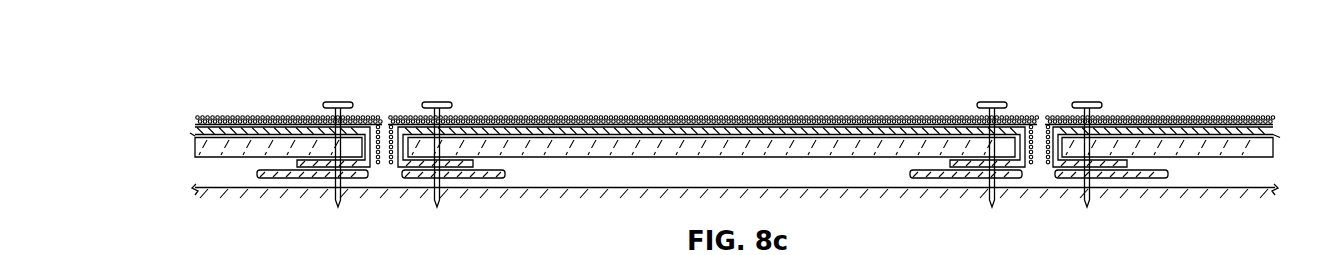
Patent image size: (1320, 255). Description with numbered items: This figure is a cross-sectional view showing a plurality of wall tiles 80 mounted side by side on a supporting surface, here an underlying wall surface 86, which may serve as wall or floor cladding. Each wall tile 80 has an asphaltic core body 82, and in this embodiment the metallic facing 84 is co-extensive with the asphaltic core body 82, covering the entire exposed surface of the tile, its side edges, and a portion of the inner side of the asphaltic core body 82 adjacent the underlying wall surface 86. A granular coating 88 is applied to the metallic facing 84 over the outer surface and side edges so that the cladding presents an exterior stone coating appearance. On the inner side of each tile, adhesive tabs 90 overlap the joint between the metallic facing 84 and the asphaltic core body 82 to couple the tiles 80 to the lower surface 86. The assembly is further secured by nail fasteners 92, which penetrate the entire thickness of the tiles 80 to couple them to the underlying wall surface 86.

The wall tile 80 is at (735, 106).
The asphaltic core body 82 is at (603, 150).
The metallic facing 84 is at (793, 132).
The underlying wall surface 86 is at (869, 190).
The granular coating 88 is at (700, 118).
The adhesive tabs 90 is at (505, 174).
The nail fasteners 92 is at (452, 75).